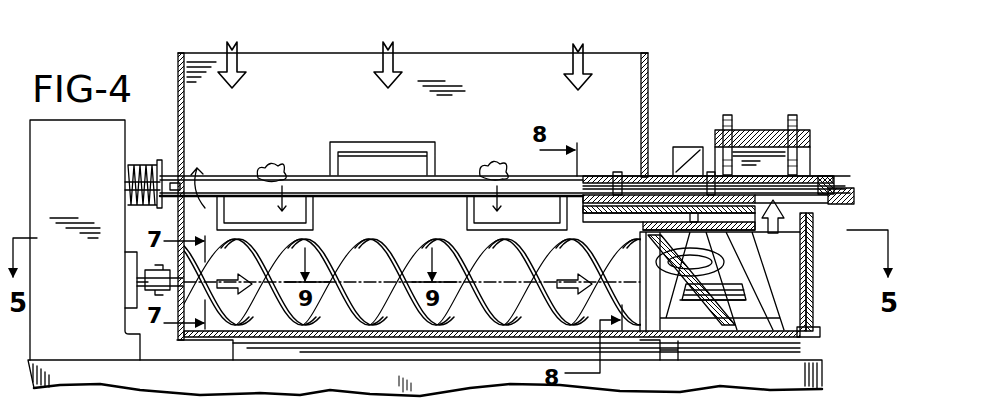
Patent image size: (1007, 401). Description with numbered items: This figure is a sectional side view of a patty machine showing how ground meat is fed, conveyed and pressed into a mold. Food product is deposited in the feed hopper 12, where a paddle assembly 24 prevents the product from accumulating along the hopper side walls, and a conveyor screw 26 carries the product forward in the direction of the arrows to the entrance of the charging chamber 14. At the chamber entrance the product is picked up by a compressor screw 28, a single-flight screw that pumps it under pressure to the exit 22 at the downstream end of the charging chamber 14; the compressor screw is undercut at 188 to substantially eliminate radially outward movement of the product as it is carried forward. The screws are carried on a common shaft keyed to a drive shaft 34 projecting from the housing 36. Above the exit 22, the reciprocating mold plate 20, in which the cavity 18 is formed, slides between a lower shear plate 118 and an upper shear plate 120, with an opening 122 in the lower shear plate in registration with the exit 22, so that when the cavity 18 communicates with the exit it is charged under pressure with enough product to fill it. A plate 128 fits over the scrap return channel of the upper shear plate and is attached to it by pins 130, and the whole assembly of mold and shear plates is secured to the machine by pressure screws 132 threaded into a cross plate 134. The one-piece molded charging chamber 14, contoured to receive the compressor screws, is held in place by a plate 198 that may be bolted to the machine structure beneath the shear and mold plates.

The feed hopper 12 is at (462, 60).
The charging chamber 14 is at (795, 334).
The cavity 18 is at (815, 212).
The reciprocating mold plate 20 is at (855, 190).
The exit 22 is at (742, 242).
The paddle assembly 24 is at (330, 160).
The conveyor screw 26 is at (366, 246).
The compressor screw 28 is at (736, 345).
The drive shaft 34 is at (126, 298).
The housing 36 is at (80, 170).
The lower shear plate 118 is at (855, 205).
The upper shear plate 120 is at (824, 176).
The opening 122 is at (808, 256).
The plate 128 is at (836, 181).
The pins 130 is at (710, 175).
The pressure screws 132 is at (793, 118).
The cross plate 134 is at (810, 134).
The undercut 188 is at (696, 292).
The plate 198 is at (815, 305).